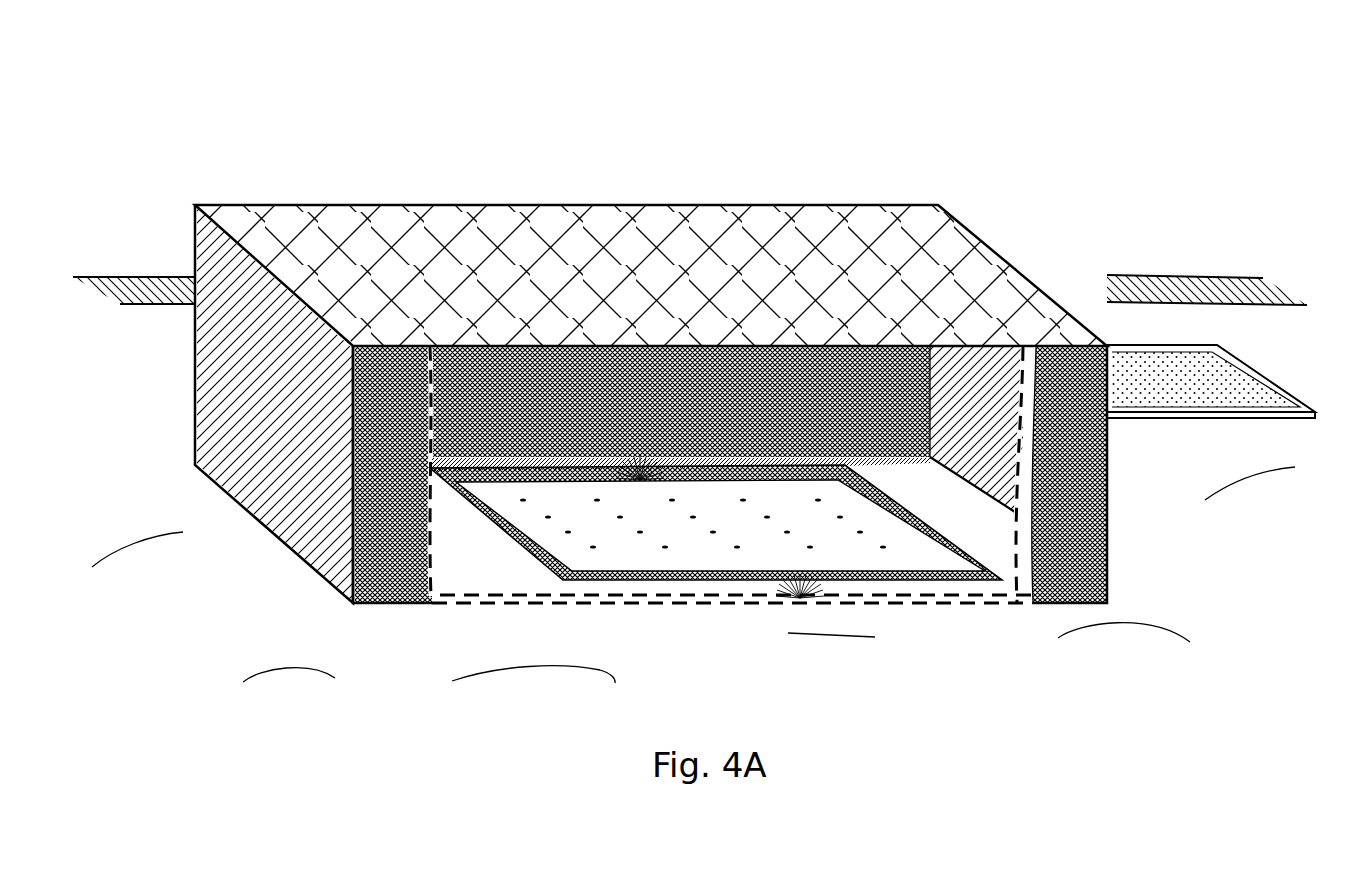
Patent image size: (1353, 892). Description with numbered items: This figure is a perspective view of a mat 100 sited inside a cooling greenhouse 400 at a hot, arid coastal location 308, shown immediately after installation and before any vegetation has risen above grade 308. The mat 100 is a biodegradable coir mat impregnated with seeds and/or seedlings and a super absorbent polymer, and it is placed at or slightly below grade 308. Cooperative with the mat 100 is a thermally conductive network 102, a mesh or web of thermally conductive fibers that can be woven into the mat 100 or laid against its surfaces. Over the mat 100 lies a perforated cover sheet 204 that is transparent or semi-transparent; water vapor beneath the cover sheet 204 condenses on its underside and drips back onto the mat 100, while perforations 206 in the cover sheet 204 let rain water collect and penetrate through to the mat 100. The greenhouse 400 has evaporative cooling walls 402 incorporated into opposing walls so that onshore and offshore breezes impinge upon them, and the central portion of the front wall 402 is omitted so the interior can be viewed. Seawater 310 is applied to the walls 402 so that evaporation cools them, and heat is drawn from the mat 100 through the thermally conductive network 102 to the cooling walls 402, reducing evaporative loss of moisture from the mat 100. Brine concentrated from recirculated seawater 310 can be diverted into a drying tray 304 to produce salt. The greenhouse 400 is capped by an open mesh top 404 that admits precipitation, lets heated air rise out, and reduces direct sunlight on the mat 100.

The cooling greenhouse 400 is at (276, 159).
The open mesh top 404 is at (692, 285).
The cooling wall 402 is at (858, 411).
The hot, arid coastal location 308 is at (240, 612).
The seawater 310 is at (1085, 276).
The drying tray 304 is at (1243, 365).
The perforated cover sheet 204 is at (807, 509).
The perforations 206 is at (588, 548).
The mat 100 is at (535, 562).
The thermally conductive network 102 is at (562, 580).